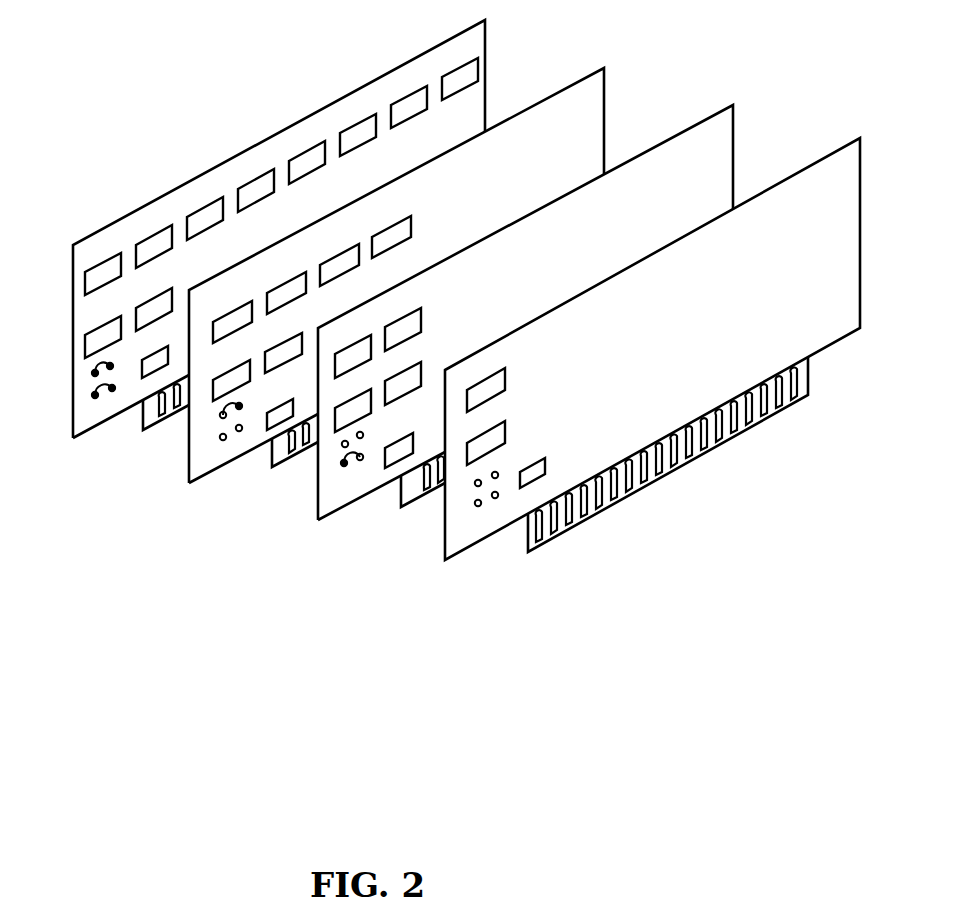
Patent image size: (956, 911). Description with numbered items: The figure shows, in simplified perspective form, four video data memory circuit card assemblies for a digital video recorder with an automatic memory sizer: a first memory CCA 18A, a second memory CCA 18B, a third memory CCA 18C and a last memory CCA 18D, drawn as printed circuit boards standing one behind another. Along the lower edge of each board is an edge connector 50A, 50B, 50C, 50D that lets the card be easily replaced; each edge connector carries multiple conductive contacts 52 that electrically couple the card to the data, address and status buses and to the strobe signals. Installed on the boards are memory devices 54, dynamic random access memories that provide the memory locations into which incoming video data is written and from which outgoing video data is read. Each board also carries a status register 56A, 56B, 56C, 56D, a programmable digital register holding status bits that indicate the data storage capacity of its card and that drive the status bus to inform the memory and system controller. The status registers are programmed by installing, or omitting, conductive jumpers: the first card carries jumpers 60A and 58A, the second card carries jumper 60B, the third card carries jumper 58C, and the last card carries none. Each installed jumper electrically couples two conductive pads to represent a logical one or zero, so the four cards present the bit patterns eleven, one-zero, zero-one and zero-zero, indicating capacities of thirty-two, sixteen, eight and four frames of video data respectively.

The first memory CCA 18A is at (420, 56).
The second memory CCA 18B is at (592, 71).
The third memory CCA 18C is at (712, 112).
The last memory CCA 18D is at (845, 143).
The memory devices 54 is at (262, 185).
The status register 56A is at (153, 364).
The status register 56B is at (292, 394).
The status register 56C is at (397, 446).
The status register 56D is at (538, 465).
The edge connector 50A is at (145, 430).
The edge connector 50B is at (272, 465).
The edge connector 50C is at (418, 496).
The edge connector 50D is at (532, 554).
The conductive contacts 52 is at (158, 418).
The conductive jumper 60A is at (92, 370).
The conductive jumper 58A is at (93, 394).
The conductive jumper 60B is at (230, 412).
The conductive jumper 58C is at (345, 466).